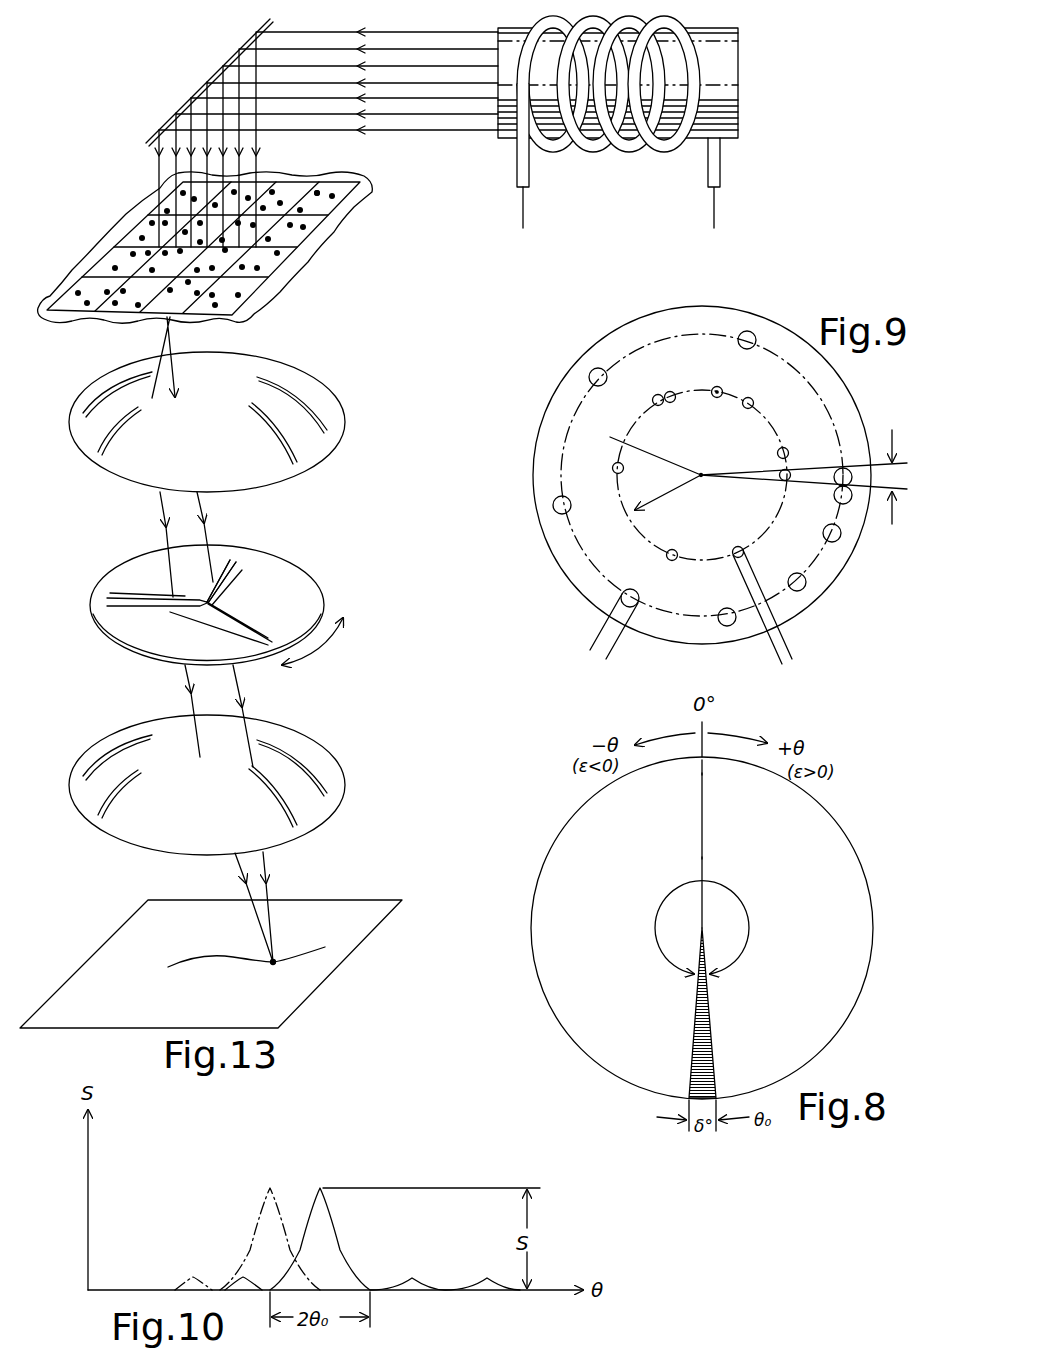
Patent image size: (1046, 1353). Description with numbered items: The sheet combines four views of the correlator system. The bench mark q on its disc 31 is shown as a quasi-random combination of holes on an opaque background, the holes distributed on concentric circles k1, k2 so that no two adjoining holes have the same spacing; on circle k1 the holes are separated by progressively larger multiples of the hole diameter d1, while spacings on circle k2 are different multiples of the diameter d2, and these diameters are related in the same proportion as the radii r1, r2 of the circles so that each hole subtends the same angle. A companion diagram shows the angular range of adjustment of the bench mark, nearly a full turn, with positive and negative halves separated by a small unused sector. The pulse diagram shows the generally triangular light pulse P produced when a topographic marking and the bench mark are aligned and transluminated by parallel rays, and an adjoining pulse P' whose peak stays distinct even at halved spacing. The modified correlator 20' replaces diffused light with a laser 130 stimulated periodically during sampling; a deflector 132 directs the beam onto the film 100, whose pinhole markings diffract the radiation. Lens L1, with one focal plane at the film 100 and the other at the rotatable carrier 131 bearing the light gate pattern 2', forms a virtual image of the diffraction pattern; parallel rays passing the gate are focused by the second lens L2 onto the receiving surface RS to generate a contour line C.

In FIG. 13, the deflector 132 is at (215, 68).
In FIG. 13, the laser 130 is at (730, 48).
In FIG. 13, the film 100 is at (287, 272).
In FIG. 13, the pulse P' is at (325, 165).
In FIG. 10, the pulse P' is at (247, 1239).
In FIG. 13, the modified correlator 20' is at (52, 353).
In FIG. 13, the rotatable carrier 131 is at (112, 577).
In FIG. 13, the filter pattern 2' is at (241, 557).
In FIG. 13, the lens L1 is at (333, 427).
In FIG. 13, the second lens L2 is at (342, 775).
In FIG. 13, the receiving surface RS is at (353, 908).
In FIG. 13, the contour line C is at (210, 958).
In FIG. 9, the chopper disc 31 is at (538, 435).
In FIG. 9, the concentric circle k1 is at (627, 355).
In FIG. 9, the concentric circle k2 is at (695, 390).
In FIG. 9, the radius r1 is at (576, 424).
In FIG. 9, the radius r2 is at (668, 493).
In FIG. 9, the bench mark q is at (563, 545).
In FIG. 9, the hole diameter d1 is at (573, 628).
In FIG. 9, the hole diameter d2 is at (763, 664).
In FIG. 10, the light pulse P is at (372, 1239).